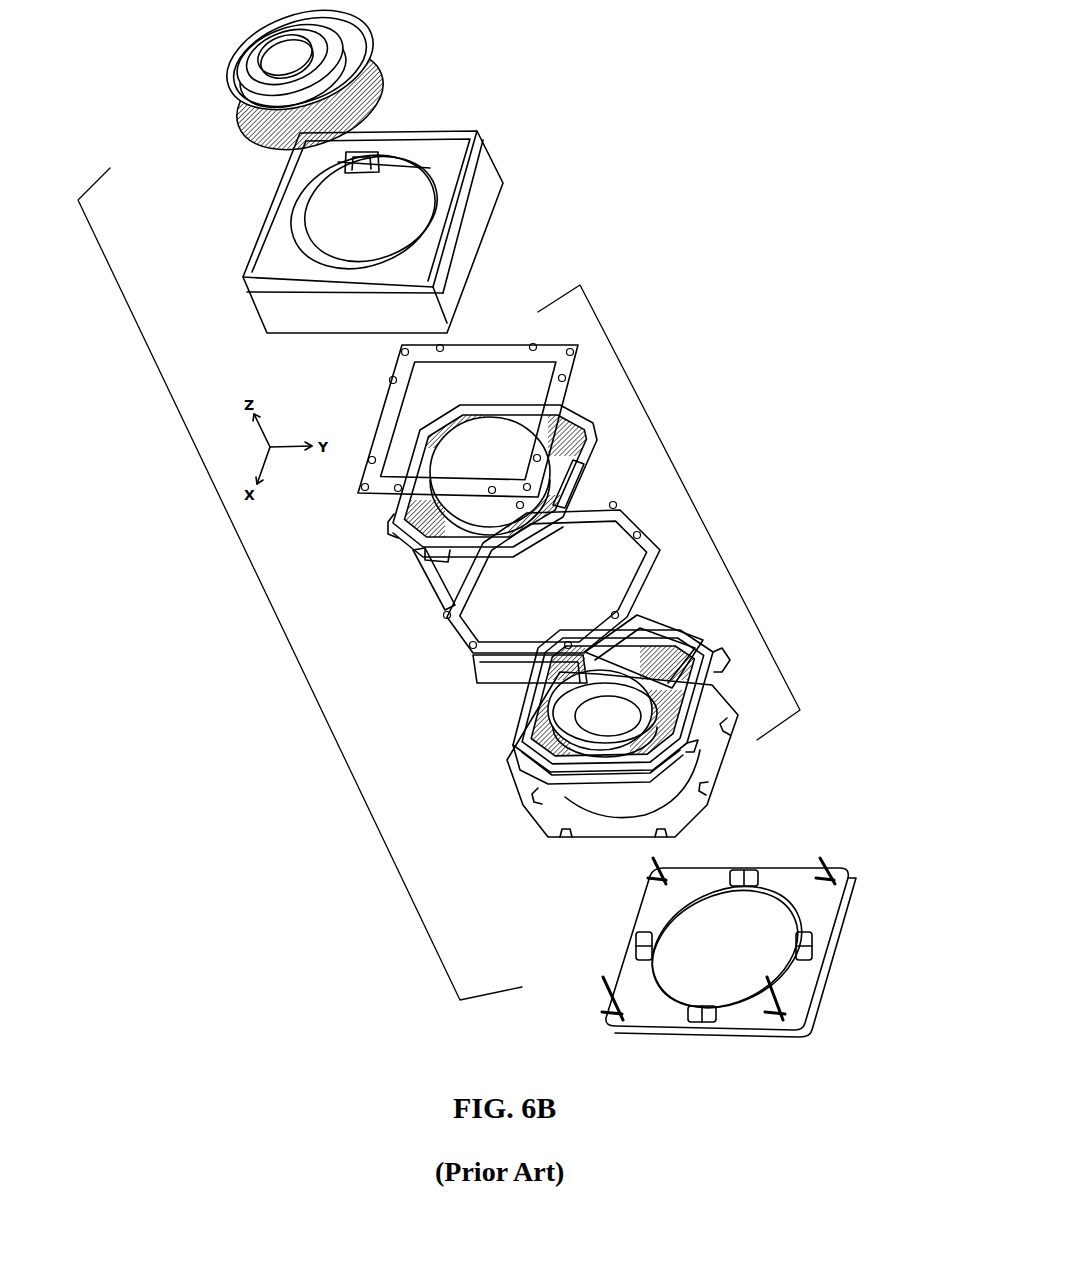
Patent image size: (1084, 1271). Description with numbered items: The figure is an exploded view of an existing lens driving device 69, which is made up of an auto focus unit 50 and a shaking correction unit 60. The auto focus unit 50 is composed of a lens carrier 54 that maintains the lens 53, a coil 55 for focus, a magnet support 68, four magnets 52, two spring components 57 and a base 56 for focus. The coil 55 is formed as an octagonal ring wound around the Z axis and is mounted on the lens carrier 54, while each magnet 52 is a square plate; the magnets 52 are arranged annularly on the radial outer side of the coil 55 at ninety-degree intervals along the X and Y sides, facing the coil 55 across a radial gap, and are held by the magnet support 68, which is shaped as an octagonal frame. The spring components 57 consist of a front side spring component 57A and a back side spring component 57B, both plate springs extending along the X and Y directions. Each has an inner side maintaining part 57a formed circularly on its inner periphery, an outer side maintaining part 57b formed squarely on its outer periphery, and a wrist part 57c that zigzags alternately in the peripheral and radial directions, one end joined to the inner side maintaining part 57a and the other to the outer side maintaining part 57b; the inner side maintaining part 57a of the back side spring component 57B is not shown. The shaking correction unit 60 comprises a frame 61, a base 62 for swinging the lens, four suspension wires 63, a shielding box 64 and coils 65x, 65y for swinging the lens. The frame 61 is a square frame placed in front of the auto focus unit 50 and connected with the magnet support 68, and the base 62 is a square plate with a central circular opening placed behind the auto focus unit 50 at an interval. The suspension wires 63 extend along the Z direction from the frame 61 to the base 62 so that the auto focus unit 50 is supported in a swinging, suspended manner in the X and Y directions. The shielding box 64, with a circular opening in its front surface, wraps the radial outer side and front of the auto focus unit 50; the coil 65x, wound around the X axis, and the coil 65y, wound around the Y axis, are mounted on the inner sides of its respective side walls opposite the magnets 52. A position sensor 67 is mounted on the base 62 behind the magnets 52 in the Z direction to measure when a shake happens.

The auto focus unit 50 is at (672, 427).
The magnet 52 is at (505, 690).
The lens 53 is at (318, 64).
The lens carrier 54 is at (510, 732).
The coil for focus 55 is at (695, 712).
The base for focus 56 is at (543, 807).
The spring component 57 is at (538, 641).
The front side spring component 57A is at (442, 524).
The back side spring component 57B is at (523, 773).
The inner side maintaining part 57a is at (440, 553).
The outer side maintaining part 57b is at (580, 458).
The wrist part 57c is at (395, 518).
The shaking correction unit 60 is at (243, 565).
The frame 61 is at (360, 480).
The base for swinging the lens 62 is at (718, 924).
The suspension wire 63 is at (820, 855).
The shielding box 64 is at (375, 215).
The coil for swinging the lens (X side) 65x is at (376, 153).
The coil for swinging the lens (Y side) 65y is at (295, 205).
The position sensor 67 is at (636, 940).
The magnet support 68 is at (564, 576).
The lens driving device 69 is at (740, 53).